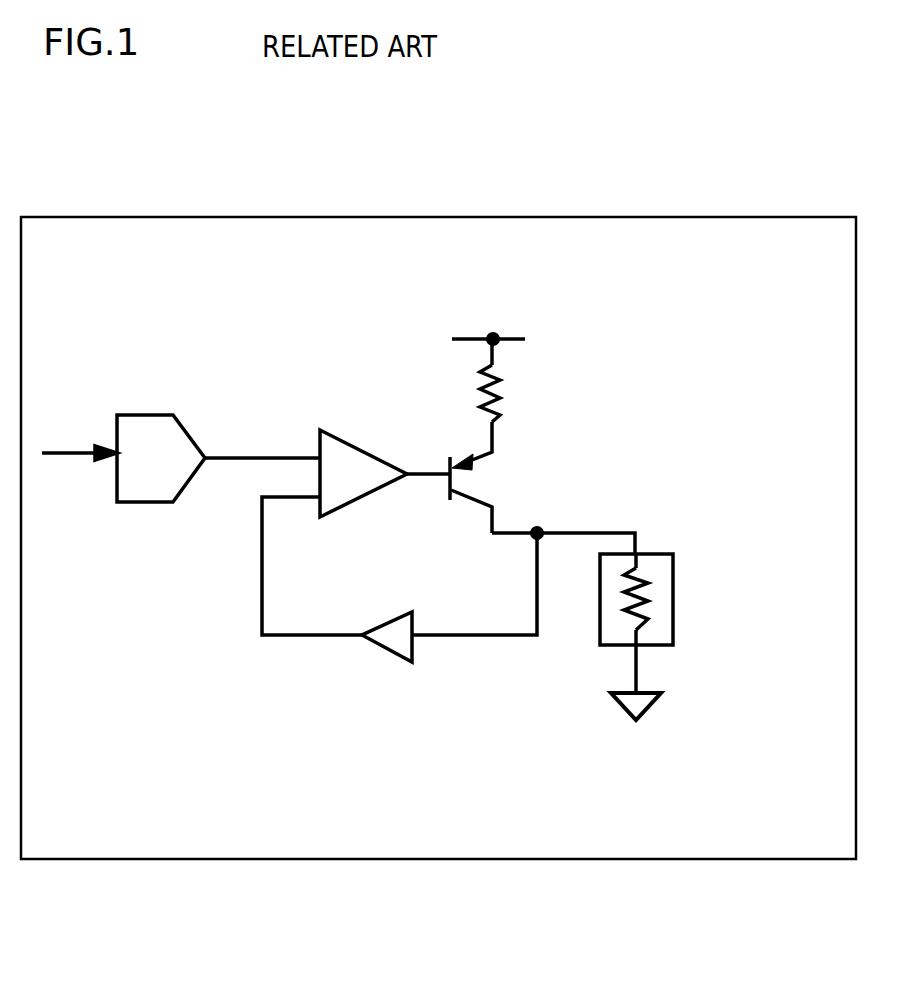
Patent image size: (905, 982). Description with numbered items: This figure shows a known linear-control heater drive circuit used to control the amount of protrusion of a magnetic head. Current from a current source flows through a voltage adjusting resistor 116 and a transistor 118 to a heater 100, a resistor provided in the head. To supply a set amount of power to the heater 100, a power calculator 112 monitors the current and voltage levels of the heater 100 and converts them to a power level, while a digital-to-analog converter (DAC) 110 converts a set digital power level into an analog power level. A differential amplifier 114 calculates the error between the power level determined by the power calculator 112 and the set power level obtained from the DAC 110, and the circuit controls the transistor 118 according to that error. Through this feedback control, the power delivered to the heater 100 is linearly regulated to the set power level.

The heater 100 is at (675, 612).
The digital-to-analog converter (DAC) 110 is at (142, 482).
The power calculator 112 is at (380, 648).
The differential amplifier 114 is at (366, 453).
The voltage adjusting resistor 116 is at (500, 384).
The transistor 118 is at (497, 483).